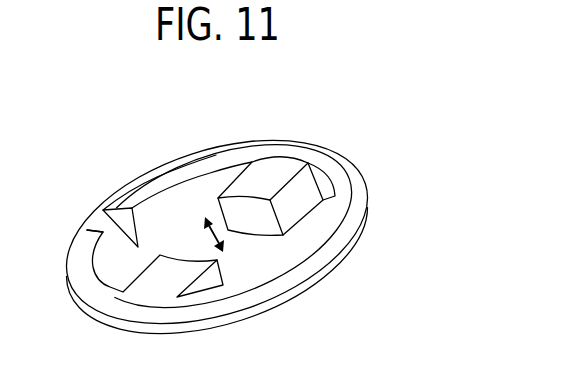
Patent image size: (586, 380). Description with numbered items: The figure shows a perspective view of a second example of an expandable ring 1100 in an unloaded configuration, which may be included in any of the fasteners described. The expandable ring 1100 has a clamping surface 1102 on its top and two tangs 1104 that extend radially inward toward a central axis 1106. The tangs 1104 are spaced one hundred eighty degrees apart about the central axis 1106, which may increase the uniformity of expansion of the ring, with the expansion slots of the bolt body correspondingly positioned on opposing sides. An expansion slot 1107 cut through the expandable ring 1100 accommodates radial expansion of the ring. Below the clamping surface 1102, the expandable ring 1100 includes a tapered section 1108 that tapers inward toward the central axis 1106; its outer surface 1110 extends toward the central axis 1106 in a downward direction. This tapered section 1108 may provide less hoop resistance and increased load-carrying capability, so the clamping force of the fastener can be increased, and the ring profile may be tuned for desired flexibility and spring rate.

The expandable ring 1100 is at (383, 124).
The clamping surface 1102 is at (156, 181).
The tangs 1104 is at (258, 222).
The central axis 1106 is at (206, 236).
The expansion slot 1107 is at (82, 220).
The tapered section 1108 is at (352, 271).
The outer surface 1110 is at (302, 287).